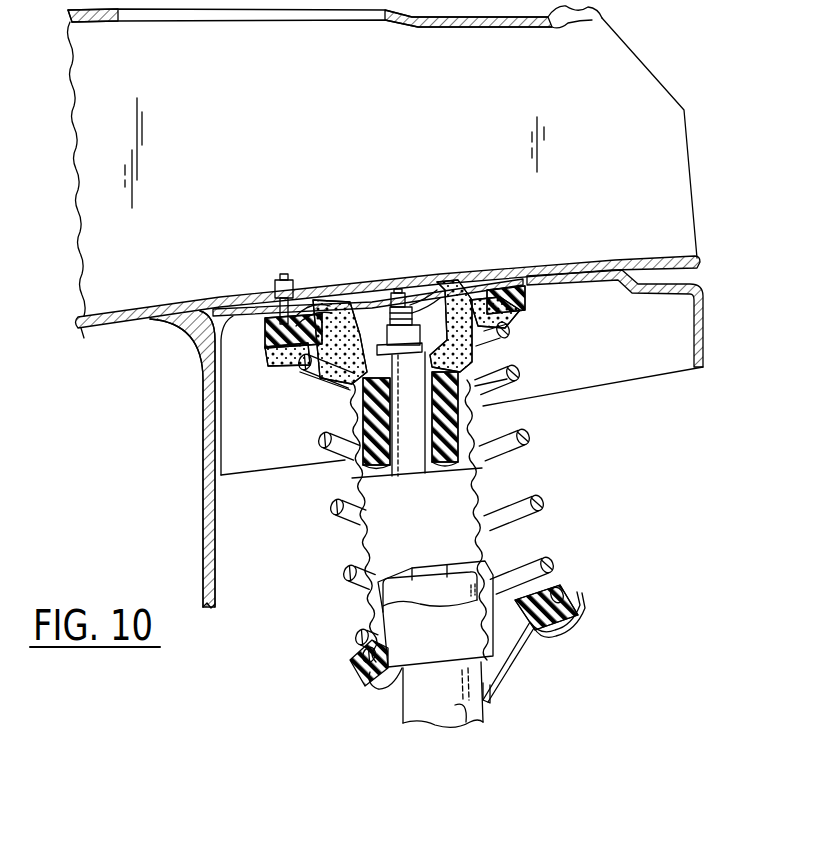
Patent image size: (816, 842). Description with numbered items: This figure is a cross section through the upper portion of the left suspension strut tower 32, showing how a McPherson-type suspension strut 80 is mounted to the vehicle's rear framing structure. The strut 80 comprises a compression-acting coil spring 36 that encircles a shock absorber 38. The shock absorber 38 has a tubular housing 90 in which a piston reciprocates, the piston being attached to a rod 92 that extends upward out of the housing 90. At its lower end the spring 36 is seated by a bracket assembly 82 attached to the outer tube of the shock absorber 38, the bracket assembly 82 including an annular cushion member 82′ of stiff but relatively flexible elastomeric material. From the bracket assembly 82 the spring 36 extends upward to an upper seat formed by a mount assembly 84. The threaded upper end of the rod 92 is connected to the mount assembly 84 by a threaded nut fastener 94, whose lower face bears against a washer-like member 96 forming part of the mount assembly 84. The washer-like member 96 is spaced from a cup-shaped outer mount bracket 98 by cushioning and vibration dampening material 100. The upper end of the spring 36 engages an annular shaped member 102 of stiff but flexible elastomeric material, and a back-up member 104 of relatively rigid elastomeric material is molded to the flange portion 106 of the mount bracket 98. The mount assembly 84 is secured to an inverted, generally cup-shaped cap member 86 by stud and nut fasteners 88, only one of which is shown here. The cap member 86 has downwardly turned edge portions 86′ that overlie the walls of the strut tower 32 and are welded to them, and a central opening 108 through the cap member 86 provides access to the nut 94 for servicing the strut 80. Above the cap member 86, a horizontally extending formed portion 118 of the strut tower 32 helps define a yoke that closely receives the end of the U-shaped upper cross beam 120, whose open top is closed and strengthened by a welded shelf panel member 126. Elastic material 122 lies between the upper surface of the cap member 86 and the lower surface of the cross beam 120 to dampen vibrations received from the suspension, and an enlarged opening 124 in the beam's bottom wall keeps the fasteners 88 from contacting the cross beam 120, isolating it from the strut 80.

The suspension strut tower 32 is at (204, 535).
The spring 36 is at (552, 501).
The shock absorber 38 is at (398, 724).
The suspension strut 80 is at (340, 641).
The bracket assembly 82 is at (520, 650).
The cushion member 82′ is at (578, 594).
The mount assembly 84 is at (530, 300).
The cap member 86 is at (668, 378).
The edge portion 86′ is at (252, 412).
The stud and nut fastener 88 is at (295, 279).
The shock absorber housing 90 is at (474, 726).
The rod 92 is at (417, 464).
The threaded nut fastener 94 is at (379, 300).
The washer-like member 96 is at (352, 380).
The outer mount bracket 98 is at (476, 348).
The cushioning and vibration dampening material 100 is at (347, 376).
The annular shaped member 102 is at (517, 313).
The back-up member 104 is at (268, 338).
The flange portion 106 is at (500, 296).
The central opening 108 is at (416, 288).
The formed portion 118 is at (125, 331).
The upper cross beam member 120 is at (244, 113).
The elastic material 122 is at (221, 309).
The enlarged opening 124 is at (270, 298).
The shelf panel member 126 is at (460, 25).